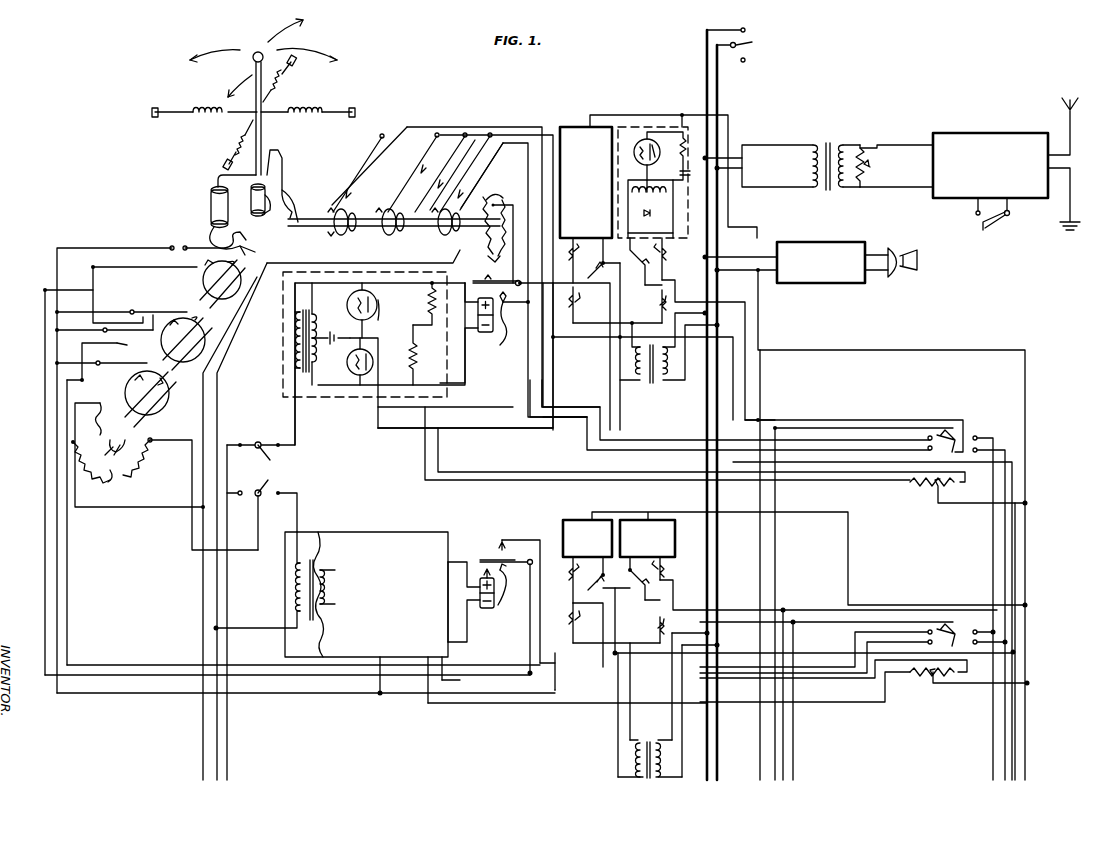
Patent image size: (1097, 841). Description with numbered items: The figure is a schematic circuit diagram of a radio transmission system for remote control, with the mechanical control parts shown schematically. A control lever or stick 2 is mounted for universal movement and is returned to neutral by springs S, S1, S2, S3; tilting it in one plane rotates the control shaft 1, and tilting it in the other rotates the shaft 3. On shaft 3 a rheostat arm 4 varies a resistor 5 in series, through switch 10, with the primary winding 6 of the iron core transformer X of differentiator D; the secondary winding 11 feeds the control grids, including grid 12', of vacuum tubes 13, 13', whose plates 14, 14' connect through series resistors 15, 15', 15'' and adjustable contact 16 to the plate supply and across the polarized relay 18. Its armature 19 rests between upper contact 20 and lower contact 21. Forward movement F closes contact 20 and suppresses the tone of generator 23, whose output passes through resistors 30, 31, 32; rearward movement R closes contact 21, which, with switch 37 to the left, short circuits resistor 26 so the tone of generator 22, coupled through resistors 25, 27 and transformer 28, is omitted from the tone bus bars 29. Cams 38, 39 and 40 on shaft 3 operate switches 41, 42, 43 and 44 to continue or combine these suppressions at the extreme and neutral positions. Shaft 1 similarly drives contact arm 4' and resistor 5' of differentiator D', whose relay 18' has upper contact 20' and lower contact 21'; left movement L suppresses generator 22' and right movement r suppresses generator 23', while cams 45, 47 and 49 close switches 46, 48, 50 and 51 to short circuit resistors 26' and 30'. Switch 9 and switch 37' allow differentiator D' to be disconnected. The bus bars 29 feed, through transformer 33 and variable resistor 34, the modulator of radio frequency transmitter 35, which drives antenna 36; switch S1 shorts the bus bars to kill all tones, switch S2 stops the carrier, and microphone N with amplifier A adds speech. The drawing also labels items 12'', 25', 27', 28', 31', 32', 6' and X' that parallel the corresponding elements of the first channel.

The rotatable control shaft 1 is at (243, 252).
The control lever or stick 2 is at (257, 52).
The shaft 3 is at (312, 219).
The rheostat arm 4 is at (500, 220).
The variable resistor 5 is at (508, 244).
The primary winding 6 is at (307, 341).
The switch 9 is at (266, 485).
The switch 10 is at (252, 447).
The secondary winding 11 is at (318, 320).
The control grid 12' is at (365, 321).
The relay unit 12'' is at (380, 364).
The vacuum tube 13 is at (372, 310).
The vacuum tube 13' is at (389, 361).
The plate 14 is at (386, 312).
The plate 14' is at (373, 380).
The resistor 15 is at (424, 303).
The resistor 15' is at (391, 334).
The resistor 15'' is at (960, 494).
The adjustable contact 16 is at (935, 494).
The polarized relay 18 is at (466, 333).
The relay 18' is at (474, 602).
The armature 19 is at (483, 280).
The upper contact 20 is at (513, 273).
The upper contact 20' is at (510, 596).
The lower contact 21 is at (509, 322).
The lower contact 21' is at (511, 584).
The tone frequency generator 22 is at (654, 169).
The tone frequency generator 22' is at (810, 546).
The tone generator 23 is at (584, 169).
The tone frequency generator 23' is at (584, 522).
The resistor 25 is at (669, 259).
The contact 25' is at (670, 569).
The resistor 26 is at (635, 261).
The resistor 26' is at (635, 584).
The resistor 27 is at (650, 306).
The contact 27' is at (646, 630).
The transformer 28 is at (670, 358).
The transformer 28' is at (650, 747).
The tone bus bars 29 is at (700, 55).
The resistor 30 is at (604, 258).
The resistor 30' is at (609, 575).
The resistor 31 is at (566, 260).
The contact 31' is at (584, 580).
The resistor 32 is at (566, 305).
The contact 32' is at (583, 623).
The transformer 33 is at (838, 145).
The variable resistor 34 is at (870, 168).
The radio frequency transmitter 35 is at (995, 138).
The antenna 36 is at (1064, 122).
The switch 37 is at (875, 589).
The switch 37' is at (854, 633).
The cam 38 is at (332, 236).
The cam 39 is at (383, 236).
The cam 40 is at (440, 236).
The switch 41 is at (353, 180).
The switch 42 is at (470, 185).
The switch 43 is at (428, 158).
The switch 44 is at (414, 184).
The cam 45 is at (200, 280).
The switch 46 is at (185, 246).
The cam 47 is at (160, 406).
The switch 48 is at (120, 370).
The cam 49 is at (202, 326).
The upper switch 50 is at (148, 310).
The lower switch 51 is at (147, 338).
The contact arm 4' is at (95, 448).
The resistor 5' is at (190, 494).
The condenser 6' is at (281, 607).
The differentiator D is at (286, 334).
The differentiator D' is at (275, 581).
The iron core transformer X is at (304, 294).
The coil X' is at (366, 594).
The audio frequency amplifier A is at (850, 282).
The microphone N is at (906, 272).
The forward direction F is at (294, 24).
The left direction L is at (208, 58).
The right direction r is at (313, 58).
The rearward direction R is at (240, 89).
The spring S is at (283, 84).
The bus bar switch S1 is at (238, 140).
The switch S2 is at (322, 110).
The spring S3 is at (210, 118).